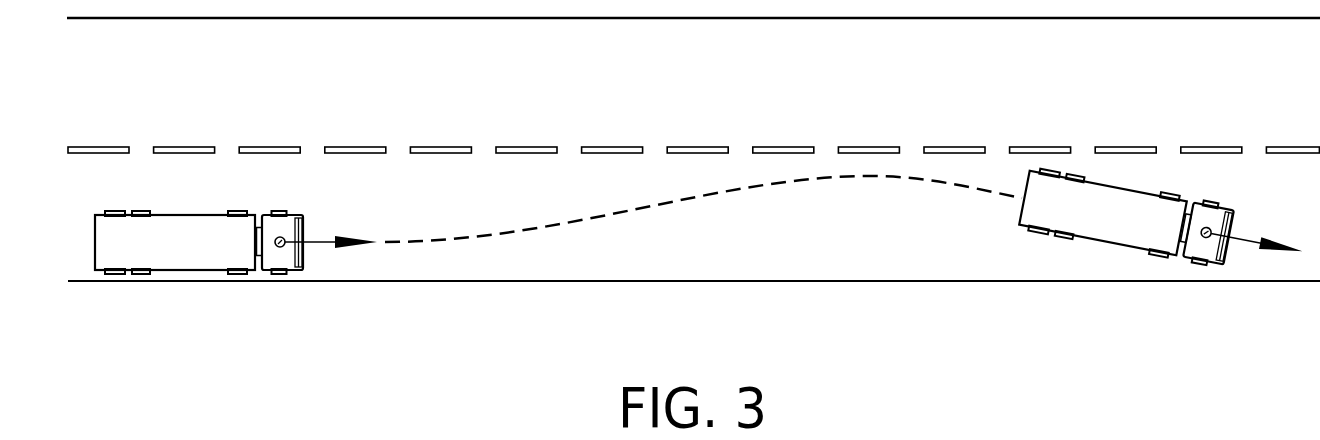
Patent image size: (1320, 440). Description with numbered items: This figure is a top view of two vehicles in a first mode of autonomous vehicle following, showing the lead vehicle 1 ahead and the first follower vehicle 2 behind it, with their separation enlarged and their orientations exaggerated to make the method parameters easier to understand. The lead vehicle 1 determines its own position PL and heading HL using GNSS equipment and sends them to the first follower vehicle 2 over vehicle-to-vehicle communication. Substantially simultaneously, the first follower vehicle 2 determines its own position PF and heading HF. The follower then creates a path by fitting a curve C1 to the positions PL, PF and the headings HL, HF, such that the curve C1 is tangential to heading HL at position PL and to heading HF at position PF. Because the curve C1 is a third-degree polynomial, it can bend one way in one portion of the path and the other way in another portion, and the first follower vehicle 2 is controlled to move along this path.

The lead vehicle 1 is at (1118, 213).
The first follower vehicle 2 is at (190, 240).
The position of the follower vehicle PF is at (278, 247).
The heading of the follower vehicle HF is at (323, 243).
The position of the lead vehicle PL is at (1203, 237).
The heading of the lead vehicle HL is at (1248, 242).
The curve C1 is at (718, 197).